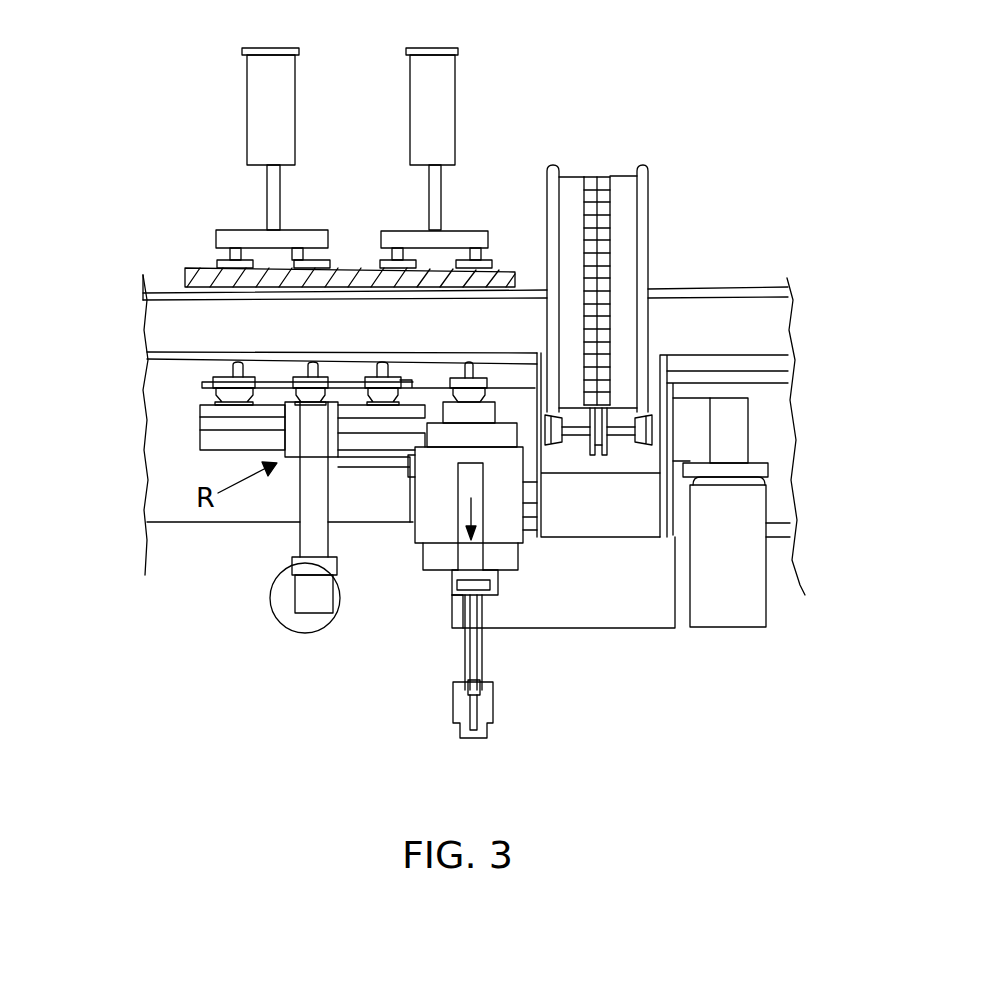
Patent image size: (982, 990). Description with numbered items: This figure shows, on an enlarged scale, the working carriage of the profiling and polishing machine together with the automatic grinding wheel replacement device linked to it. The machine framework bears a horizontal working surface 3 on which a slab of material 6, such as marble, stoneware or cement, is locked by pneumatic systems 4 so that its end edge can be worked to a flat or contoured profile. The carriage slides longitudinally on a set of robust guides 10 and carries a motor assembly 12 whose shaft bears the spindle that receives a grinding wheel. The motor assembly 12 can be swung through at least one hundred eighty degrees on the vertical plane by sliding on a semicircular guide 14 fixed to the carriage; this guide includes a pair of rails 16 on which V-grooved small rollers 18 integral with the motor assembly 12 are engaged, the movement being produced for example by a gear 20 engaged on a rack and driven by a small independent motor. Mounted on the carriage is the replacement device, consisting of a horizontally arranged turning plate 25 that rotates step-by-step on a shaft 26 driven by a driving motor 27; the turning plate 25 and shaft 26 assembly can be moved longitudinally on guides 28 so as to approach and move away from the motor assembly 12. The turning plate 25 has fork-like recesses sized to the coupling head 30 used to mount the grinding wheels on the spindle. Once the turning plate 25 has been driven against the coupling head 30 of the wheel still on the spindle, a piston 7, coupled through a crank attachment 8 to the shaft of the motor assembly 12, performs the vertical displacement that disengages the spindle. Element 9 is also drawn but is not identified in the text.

The horizontal working surface 3 is at (742, 290).
The pneumatic systems 4 is at (442, 82).
The slab of material 6 is at (195, 270).
The piston 7 is at (458, 550).
The crank attachment 8 is at (460, 697).
The chain 9 is at (605, 262).
The guides 10 is at (780, 380).
The motor assembly 12 is at (433, 527).
The semicircular guide 14 is at (620, 177).
The rails 16 is at (643, 192).
The V-grooved small rollers 18 is at (553, 446).
The gear 20 is at (600, 456).
The turning plate 25 is at (278, 382).
The shaft 26 is at (310, 540).
The driving motor 27 is at (285, 598).
The guides 28 is at (212, 423).
The coupling head 30 is at (210, 392).